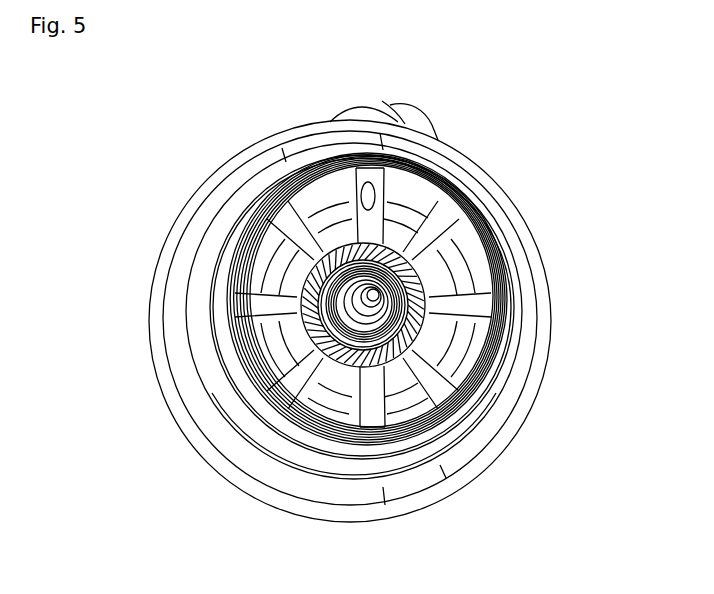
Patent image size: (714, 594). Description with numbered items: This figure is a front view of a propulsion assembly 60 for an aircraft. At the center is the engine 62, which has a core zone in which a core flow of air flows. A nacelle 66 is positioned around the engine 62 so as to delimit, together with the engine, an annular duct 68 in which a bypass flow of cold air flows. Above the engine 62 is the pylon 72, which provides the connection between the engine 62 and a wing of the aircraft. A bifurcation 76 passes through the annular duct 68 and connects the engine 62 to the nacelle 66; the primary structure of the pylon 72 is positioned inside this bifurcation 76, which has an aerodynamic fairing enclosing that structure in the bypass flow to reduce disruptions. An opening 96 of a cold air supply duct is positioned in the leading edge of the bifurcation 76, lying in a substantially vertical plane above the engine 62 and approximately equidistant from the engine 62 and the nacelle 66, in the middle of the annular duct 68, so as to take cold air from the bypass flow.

The propulsion assembly 60 is at (152, 207).
The engine 62 is at (364, 321).
The nacelle 66 is at (543, 399).
The annular duct 68 is at (297, 190).
The pylon 72 is at (379, 100).
The bifurcation 76 is at (394, 210).
The opening 96 is at (384, 190).